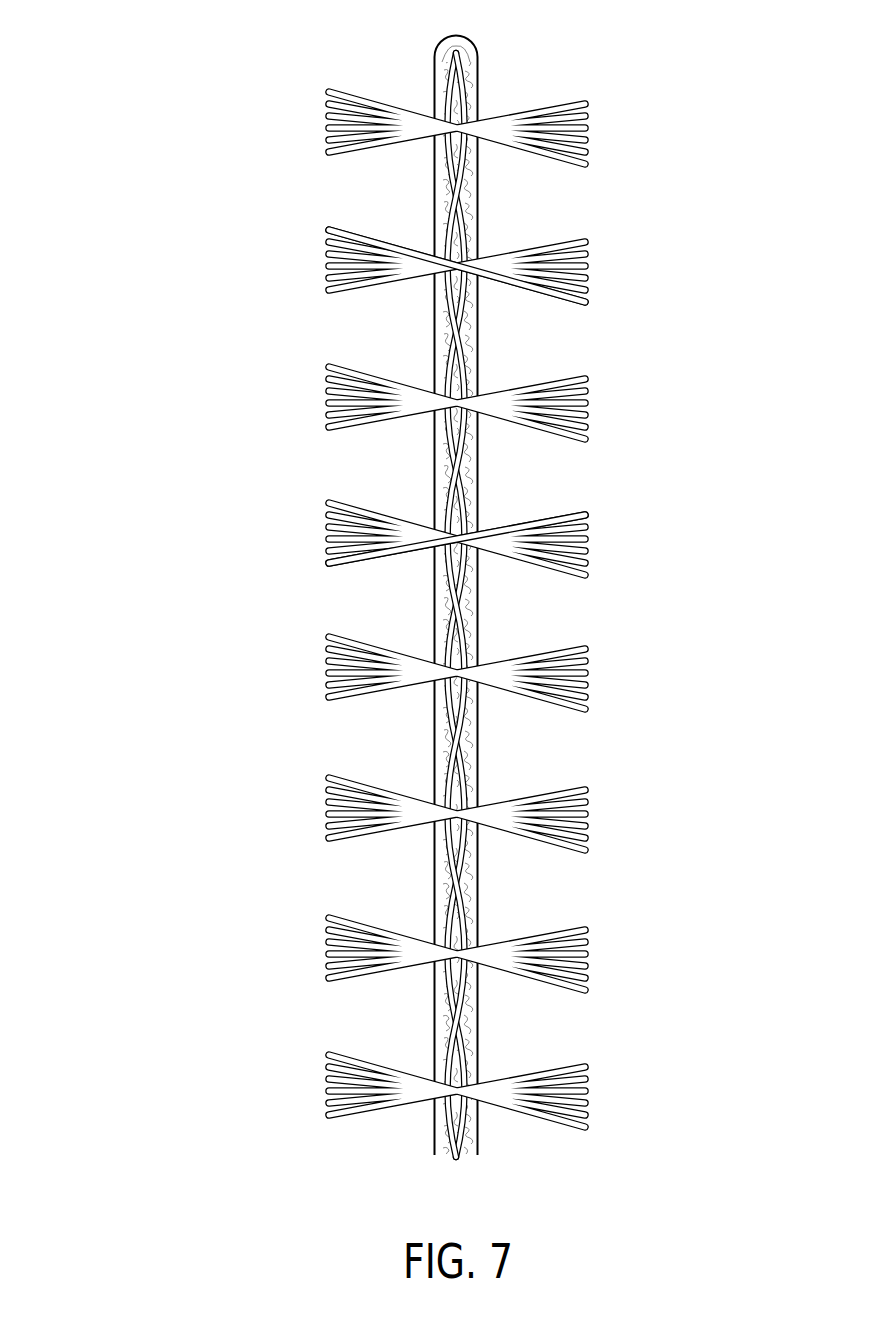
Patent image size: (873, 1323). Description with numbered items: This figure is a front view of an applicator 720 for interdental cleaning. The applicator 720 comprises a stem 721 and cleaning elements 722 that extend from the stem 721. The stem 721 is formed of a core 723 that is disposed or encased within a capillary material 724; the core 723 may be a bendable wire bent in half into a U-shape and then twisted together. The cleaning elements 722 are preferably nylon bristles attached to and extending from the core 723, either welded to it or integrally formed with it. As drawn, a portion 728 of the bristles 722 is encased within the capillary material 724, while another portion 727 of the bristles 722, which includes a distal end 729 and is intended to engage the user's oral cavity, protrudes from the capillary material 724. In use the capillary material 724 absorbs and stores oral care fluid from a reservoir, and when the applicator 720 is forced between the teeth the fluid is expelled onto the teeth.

The applicator 720 is at (97, 105).
The stem 721 is at (410, 716).
The cleaning elements 722 is at (590, 272).
The core 723 is at (457, 610).
The capillary material 724 is at (470, 752).
The portion of the bristles 727 is at (553, 322).
The portion of the bristles 728 is at (470, 258).
The distal end 729 is at (592, 104).